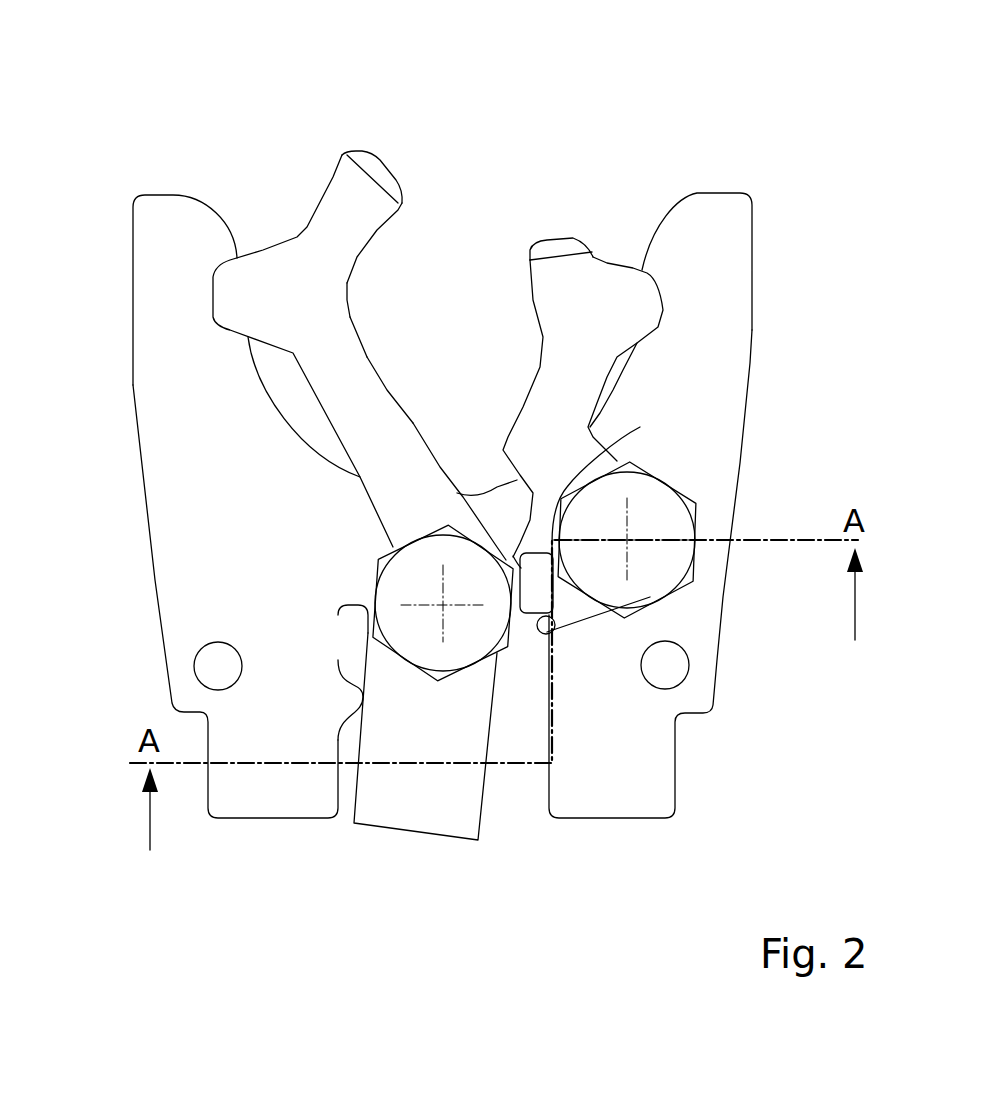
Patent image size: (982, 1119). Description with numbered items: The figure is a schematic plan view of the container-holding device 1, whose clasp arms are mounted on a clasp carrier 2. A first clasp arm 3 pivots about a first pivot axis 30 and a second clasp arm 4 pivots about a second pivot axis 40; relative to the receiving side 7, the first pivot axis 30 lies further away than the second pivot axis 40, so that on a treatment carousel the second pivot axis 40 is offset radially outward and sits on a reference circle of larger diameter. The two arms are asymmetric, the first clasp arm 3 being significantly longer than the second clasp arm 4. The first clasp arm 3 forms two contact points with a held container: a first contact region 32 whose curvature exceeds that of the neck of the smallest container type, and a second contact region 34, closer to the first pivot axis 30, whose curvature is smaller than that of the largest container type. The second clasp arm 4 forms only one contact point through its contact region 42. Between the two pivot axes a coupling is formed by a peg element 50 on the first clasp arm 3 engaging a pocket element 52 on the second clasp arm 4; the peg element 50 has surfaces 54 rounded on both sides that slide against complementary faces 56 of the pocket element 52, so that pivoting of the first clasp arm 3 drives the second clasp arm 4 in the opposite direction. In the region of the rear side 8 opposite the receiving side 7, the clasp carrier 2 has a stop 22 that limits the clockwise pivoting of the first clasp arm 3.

The device 1 is at (660, 108).
The clasp carrier 2 is at (147, 287).
The first clasp arm 3 is at (340, 185).
The second clasp arm 4 is at (573, 270).
The receiving side 7 is at (466, 175).
The rear side 8 is at (452, 862).
The stop 22 is at (360, 702).
The first pivot axis 30 is at (443, 607).
The first contact region 32 is at (350, 287).
The second contact region 34 is at (388, 385).
The second pivot axis 40 is at (627, 540).
The contact region 42 is at (543, 353).
The peg element 50 is at (517, 617).
The pocket element 52 is at (578, 613).
The surfaces 54 is at (640, 427).
The faces 56 is at (517, 567).